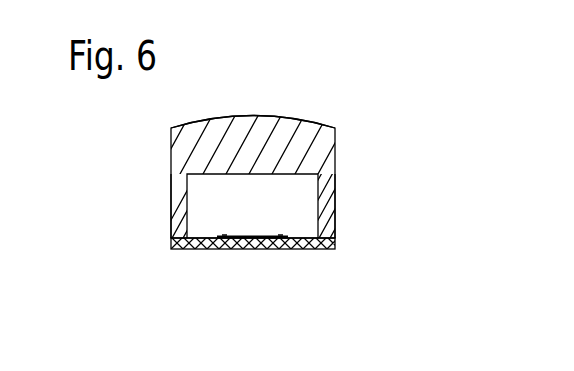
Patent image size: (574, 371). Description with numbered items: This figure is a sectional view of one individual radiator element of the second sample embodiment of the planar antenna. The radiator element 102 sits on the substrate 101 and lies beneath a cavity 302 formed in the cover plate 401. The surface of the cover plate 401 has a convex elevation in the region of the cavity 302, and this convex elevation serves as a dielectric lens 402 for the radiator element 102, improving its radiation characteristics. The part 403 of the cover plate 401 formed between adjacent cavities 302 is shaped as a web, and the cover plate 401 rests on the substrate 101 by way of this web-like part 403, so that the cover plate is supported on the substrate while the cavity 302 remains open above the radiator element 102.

The cover plate 401 is at (325, 177).
The dielectric lens 402 is at (192, 123).
The cavity 302 is at (272, 188).
The web-like part of the cover plate 403 is at (180, 227).
The substrate 101 is at (295, 250).
The radiator element 102 is at (232, 234).